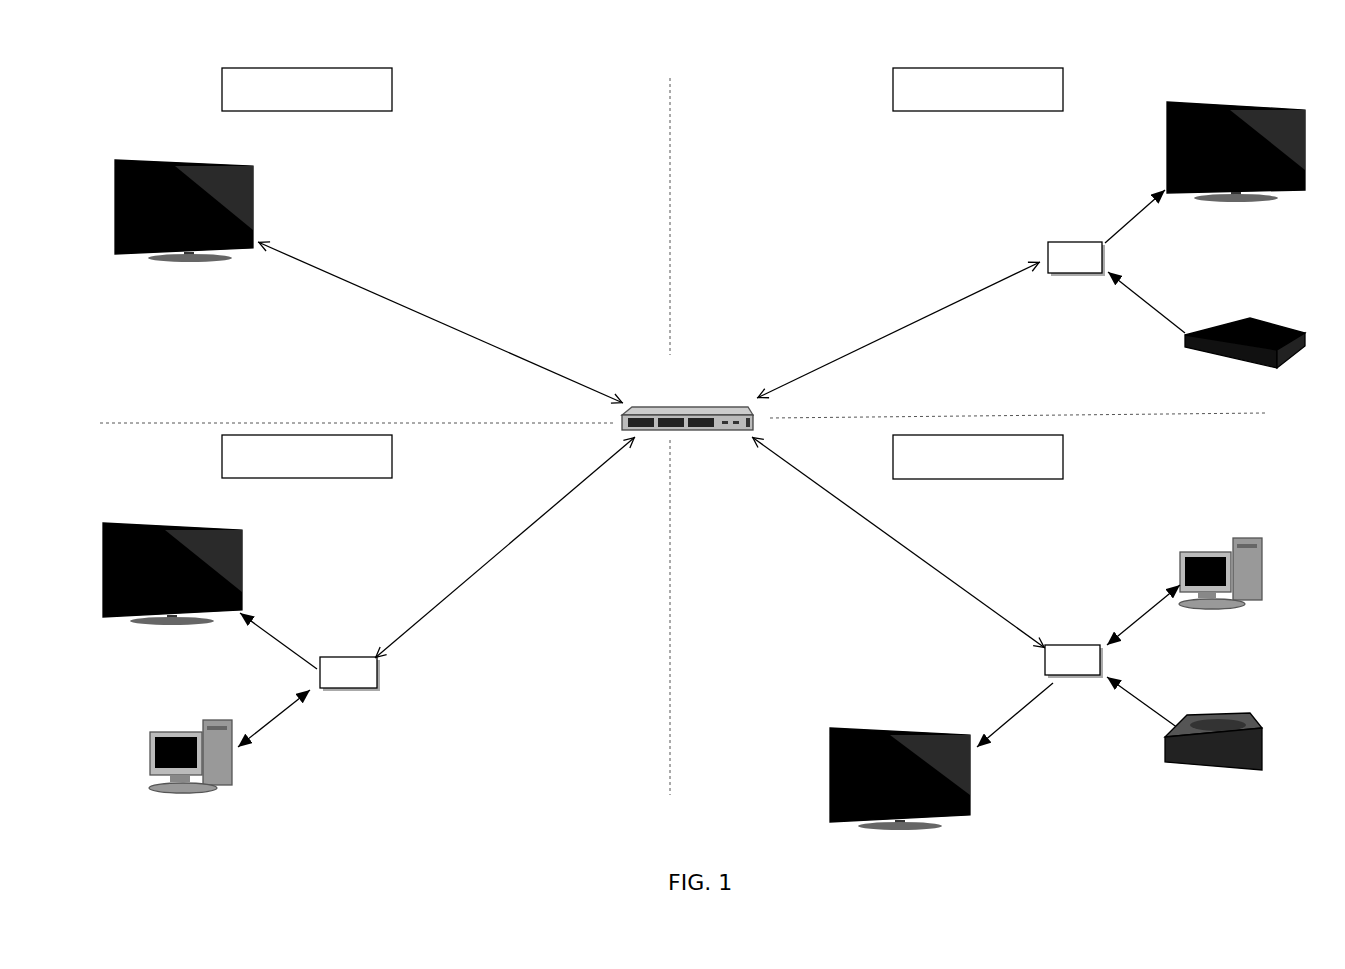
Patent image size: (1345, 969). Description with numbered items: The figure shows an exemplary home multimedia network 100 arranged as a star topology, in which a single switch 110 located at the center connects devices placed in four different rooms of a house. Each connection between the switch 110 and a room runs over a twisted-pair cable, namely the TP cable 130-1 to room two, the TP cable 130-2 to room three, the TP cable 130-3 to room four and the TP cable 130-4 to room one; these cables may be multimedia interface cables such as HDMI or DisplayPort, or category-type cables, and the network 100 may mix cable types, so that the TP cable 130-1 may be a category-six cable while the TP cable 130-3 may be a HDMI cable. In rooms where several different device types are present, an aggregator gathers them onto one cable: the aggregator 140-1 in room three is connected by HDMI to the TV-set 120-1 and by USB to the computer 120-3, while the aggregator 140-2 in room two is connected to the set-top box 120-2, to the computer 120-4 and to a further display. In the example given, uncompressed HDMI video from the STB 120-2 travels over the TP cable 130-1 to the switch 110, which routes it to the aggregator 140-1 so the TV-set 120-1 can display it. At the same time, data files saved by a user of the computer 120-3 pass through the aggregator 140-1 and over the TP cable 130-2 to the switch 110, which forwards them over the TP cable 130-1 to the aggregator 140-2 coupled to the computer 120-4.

The home multimedia network 100 is at (716, 72).
The switch 110 is at (687, 395).
The TV-set 120-1 is at (243, 540).
The set-top box 120-2 is at (1177, 762).
The computer 120-3 is at (233, 753).
The computer 120-4 is at (1218, 548).
The TP cable 130-1 is at (898, 542).
The TP cable 130-2 is at (505, 547).
The TP cable 130-3 is at (440, 322).
The TP cable 130-4 is at (898, 330).
The aggregator 140-1 is at (380, 683).
The aggregator 140-2 is at (1058, 677).